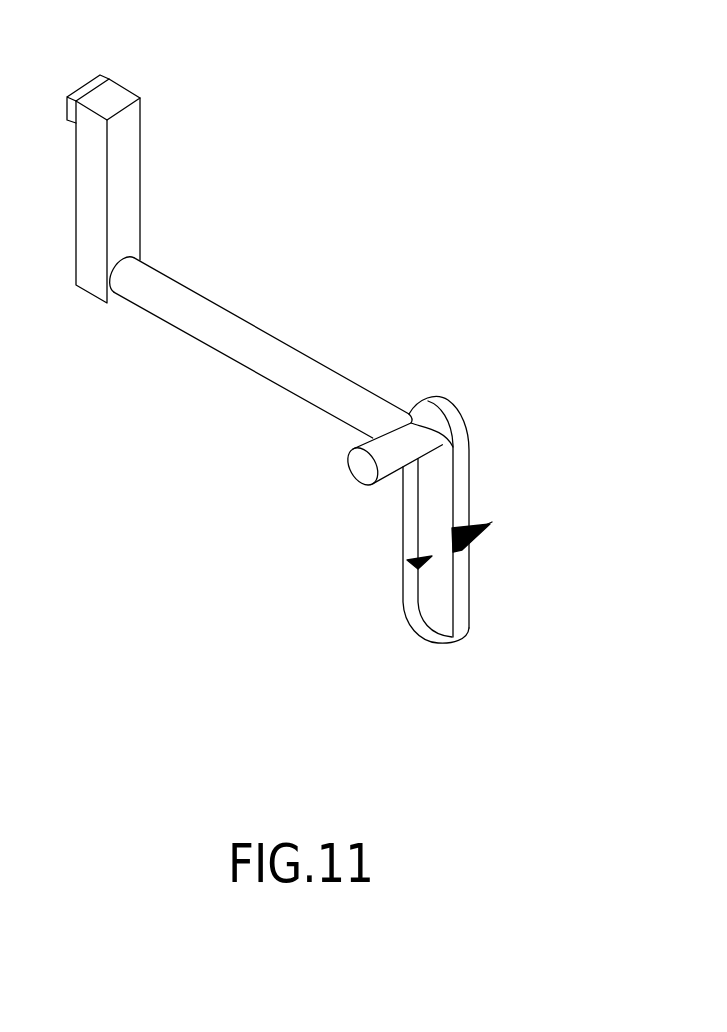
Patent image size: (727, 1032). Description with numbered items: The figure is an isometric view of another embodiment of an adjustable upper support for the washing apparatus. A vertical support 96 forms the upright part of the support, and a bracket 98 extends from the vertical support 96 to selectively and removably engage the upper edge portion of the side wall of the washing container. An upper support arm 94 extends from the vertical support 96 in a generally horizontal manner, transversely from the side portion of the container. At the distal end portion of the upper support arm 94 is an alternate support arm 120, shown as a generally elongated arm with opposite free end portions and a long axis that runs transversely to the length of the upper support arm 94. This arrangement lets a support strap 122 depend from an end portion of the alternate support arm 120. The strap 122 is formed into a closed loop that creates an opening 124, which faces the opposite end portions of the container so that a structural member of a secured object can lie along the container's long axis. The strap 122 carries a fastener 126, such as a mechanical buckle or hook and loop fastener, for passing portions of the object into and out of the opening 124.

The upper support arm 94 is at (252, 331).
The vertical support 96 is at (131, 175).
The bracket 98 is at (84, 91).
The alternate support arm 120 is at (382, 471).
The support strap 122 is at (463, 480).
The opening 124 is at (408, 561).
The fastener 126 is at (463, 545).